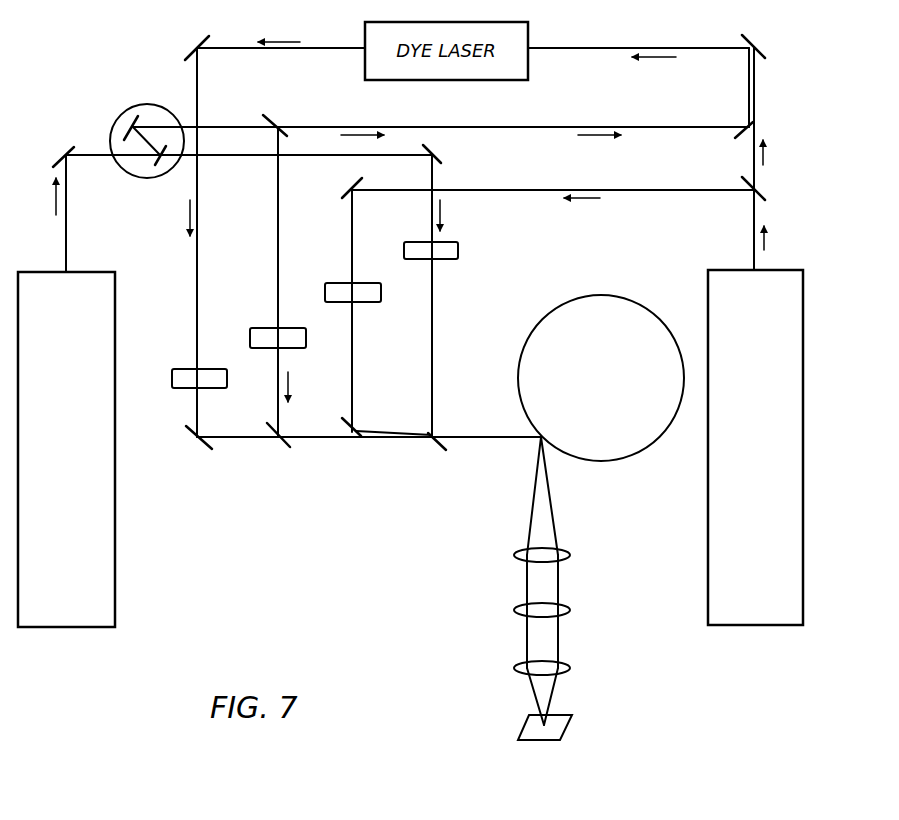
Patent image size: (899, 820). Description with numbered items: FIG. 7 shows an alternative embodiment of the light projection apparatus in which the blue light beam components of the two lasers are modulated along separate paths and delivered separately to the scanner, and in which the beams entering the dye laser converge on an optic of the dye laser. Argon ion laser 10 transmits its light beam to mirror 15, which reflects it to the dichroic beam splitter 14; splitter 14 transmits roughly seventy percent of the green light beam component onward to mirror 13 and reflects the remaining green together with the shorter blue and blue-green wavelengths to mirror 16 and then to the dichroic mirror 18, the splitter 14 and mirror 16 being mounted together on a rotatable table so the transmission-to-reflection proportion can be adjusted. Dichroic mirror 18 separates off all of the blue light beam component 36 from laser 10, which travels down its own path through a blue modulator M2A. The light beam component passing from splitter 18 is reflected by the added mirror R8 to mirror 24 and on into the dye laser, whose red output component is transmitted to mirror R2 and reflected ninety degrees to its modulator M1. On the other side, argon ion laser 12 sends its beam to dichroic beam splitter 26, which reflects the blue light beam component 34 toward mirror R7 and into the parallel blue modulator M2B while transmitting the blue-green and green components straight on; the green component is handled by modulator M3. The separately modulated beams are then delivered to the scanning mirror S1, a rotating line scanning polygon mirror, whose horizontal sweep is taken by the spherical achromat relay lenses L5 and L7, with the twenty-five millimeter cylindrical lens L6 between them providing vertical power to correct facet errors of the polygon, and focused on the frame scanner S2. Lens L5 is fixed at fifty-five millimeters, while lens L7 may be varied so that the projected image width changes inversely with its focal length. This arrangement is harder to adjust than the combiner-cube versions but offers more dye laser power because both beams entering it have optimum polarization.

The mirror R2 is at (193, 42).
The mirror 16 is at (132, 117).
The dichroic beam splitter 14 is at (160, 168).
The mirror 15 is at (66, 150).
The dichroic mirror 18 is at (276, 118).
The mirror 13 is at (442, 158).
The mirror R7 is at (345, 192).
The mirror 24 is at (763, 48).
The mirror R8 is at (735, 136).
The dichroic beam splitter 26 is at (764, 192).
The blue light beam component 36 is at (278, 200).
The blue light beam component 34 is at (502, 192).
The argon ion laser 10 is at (115, 350).
The argon ion laser 12 is at (803, 322).
The modulator M1 is at (227, 384).
The blue modulator M2A is at (306, 343).
The blue modulator M2B is at (381, 297).
The modulator M3 is at (458, 250).
The scanning mirror S1 is at (650, 443).
The lens L5 is at (570, 555).
The lens L6 is at (570, 610).
The lens L7 is at (570, 668).
The frame scanner S2 is at (568, 728).